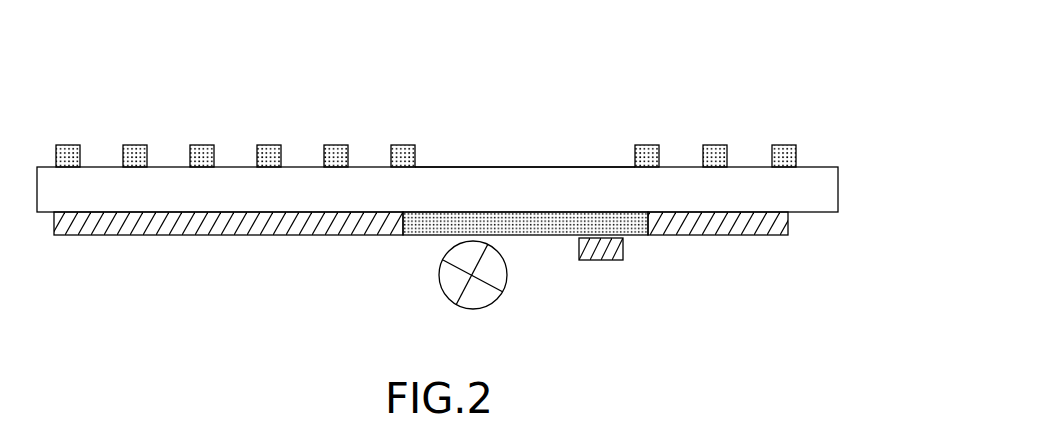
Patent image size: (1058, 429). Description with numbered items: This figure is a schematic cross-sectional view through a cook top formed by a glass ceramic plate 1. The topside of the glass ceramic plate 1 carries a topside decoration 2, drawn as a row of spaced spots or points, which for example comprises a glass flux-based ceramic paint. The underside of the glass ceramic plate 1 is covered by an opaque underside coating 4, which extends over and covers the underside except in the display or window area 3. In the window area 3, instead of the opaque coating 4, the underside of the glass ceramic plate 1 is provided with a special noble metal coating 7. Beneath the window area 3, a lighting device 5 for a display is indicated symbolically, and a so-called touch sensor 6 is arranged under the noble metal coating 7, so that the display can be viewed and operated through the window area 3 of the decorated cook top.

The glass ceramic plate 1 is at (815, 180).
The topside decoration 2 is at (270, 147).
The display or window area 3 is at (530, 155).
The opaque underside coating 4 is at (797, 277).
The lighting device 5 is at (438, 275).
The touch sensor 6 is at (603, 260).
The noble metal coating 7 is at (637, 226).